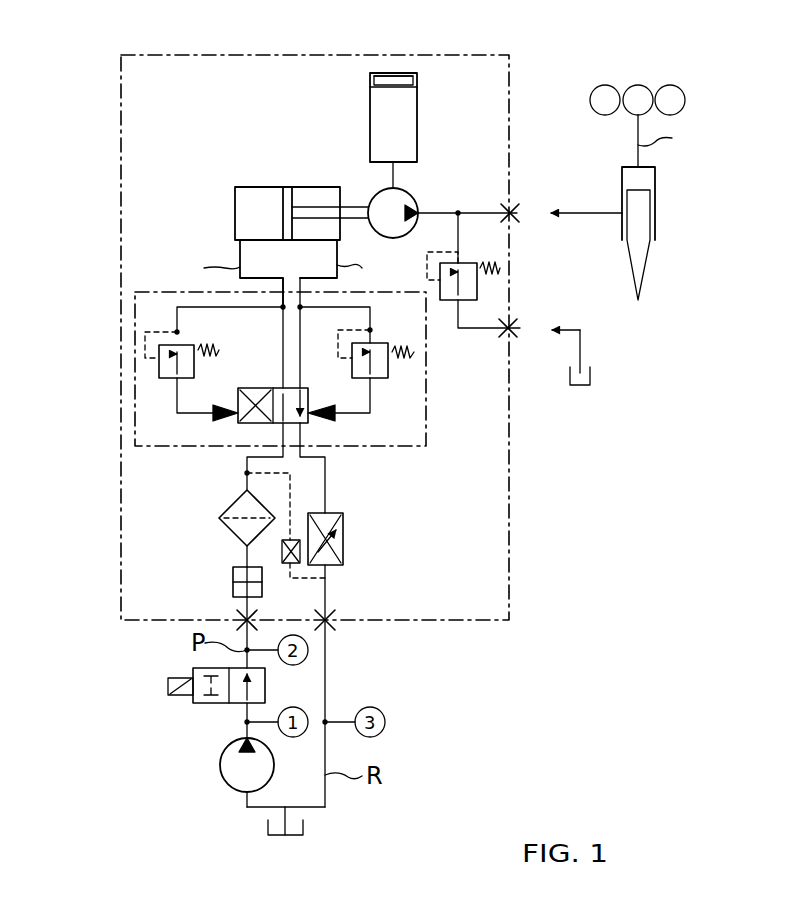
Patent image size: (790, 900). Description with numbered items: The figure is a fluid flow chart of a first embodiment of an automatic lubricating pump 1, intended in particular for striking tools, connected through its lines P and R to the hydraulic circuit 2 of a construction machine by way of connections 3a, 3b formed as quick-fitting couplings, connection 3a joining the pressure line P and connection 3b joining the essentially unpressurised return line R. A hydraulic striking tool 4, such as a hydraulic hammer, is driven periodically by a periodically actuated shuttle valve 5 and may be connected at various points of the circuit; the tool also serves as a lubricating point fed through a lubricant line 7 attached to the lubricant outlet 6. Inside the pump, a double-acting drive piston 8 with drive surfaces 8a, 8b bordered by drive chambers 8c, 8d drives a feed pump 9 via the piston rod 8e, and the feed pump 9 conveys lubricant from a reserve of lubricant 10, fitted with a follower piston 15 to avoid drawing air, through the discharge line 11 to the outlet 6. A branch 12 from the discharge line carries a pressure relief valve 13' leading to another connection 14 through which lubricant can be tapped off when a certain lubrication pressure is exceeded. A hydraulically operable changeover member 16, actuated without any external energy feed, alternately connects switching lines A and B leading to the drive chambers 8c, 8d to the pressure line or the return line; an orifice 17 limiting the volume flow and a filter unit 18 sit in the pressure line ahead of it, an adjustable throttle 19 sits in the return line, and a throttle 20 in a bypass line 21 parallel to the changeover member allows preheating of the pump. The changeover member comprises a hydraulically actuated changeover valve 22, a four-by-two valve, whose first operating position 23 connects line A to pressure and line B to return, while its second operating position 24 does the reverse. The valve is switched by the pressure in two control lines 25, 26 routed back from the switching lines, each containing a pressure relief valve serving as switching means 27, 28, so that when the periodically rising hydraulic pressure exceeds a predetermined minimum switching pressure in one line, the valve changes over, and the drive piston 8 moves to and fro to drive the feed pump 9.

The automatic lubricating pump 1 is at (121, 128).
The hydraulic circuit 2 is at (132, 718).
The connection 3a is at (236, 618).
The connection 3b is at (338, 629).
The striking tool 4 is at (670, 194).
The shuttle valve 5 is at (193, 668).
The lubricant outlet 6 is at (521, 203).
The lubricant line 7 is at (582, 213).
The double-acting drive piston 8 is at (281, 194).
The drive surface 8a is at (280, 207).
The drive surface 8b is at (295, 197).
The drive chamber 8c is at (250, 220).
The drive chamber 8d is at (328, 192).
The piston rod 8e is at (352, 207).
The feed pump 9 is at (428, 201).
The reserve of lubricant 10 is at (408, 112).
The discharge line 11 is at (484, 213).
The branch 12 is at (458, 239).
The pressure relief valve 13' is at (473, 321).
The connection 14 is at (520, 340).
The follower piston 15 is at (397, 80).
The changeover member 16 is at (135, 345).
The orifice 17 is at (233, 578).
The filter unit 18 is at (236, 506).
The adjustable throttle 19 is at (343, 550).
The throttle 20 is at (310, 576).
The bypass line 21 is at (292, 500).
The changeover valve 22 is at (281, 426).
The first operating position 23 is at (308, 388).
The second operating position 24 is at (245, 387).
The control line 25 is at (376, 292).
The control line 26 is at (177, 307).
The switching means 27 is at (388, 378).
The switching means 28 is at (159, 372).